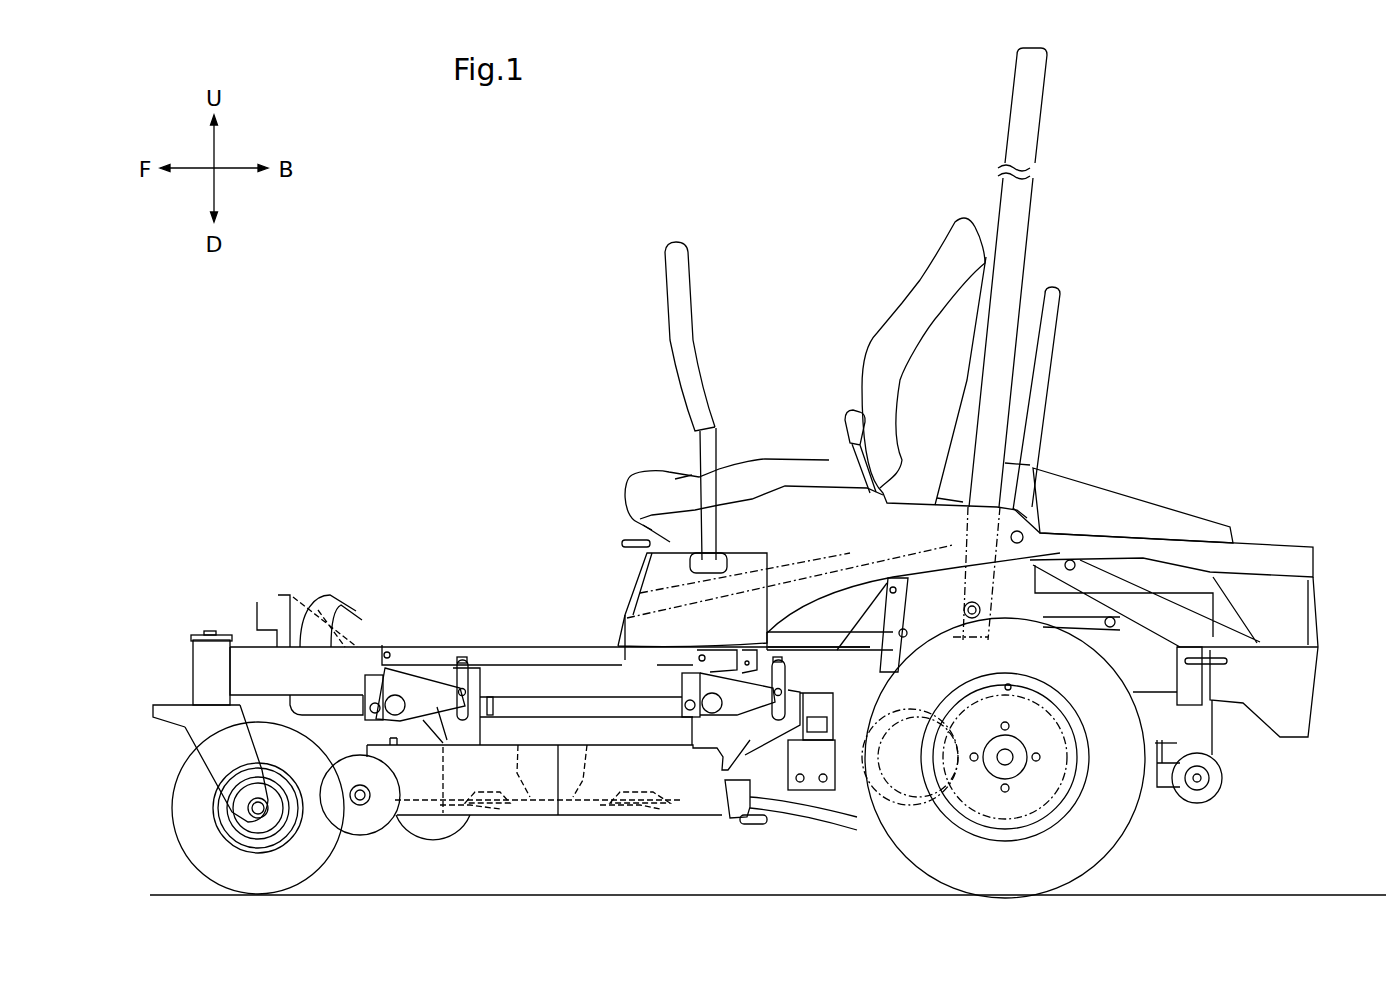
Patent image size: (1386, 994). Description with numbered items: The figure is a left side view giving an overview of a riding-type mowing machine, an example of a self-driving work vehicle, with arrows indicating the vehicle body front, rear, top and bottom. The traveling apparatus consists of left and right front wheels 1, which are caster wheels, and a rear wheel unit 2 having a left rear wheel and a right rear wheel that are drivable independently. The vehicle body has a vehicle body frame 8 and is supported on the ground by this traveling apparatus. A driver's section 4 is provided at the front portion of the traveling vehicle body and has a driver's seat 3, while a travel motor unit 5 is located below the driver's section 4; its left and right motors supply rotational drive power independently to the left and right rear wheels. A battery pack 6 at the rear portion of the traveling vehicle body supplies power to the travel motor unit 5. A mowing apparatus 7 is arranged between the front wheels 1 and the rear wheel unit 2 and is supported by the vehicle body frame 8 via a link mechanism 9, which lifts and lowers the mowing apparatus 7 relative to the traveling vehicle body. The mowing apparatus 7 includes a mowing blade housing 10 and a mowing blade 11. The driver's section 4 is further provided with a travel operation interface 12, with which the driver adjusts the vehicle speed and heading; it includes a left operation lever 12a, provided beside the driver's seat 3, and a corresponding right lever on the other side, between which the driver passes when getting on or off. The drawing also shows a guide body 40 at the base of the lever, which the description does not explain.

The front wheels 1 is at (200, 823).
The rear wheel unit 2 is at (1087, 827).
The driver's seat 3 is at (875, 340).
The driver's section 4 is at (752, 185).
The travel motor unit 5 is at (888, 800).
The battery pack 6 is at (1213, 727).
The mowing apparatus 7 is at (690, 823).
The vehicle body frame 8 is at (562, 682).
The link mechanism 9 is at (483, 623).
The mowing blade housing 10 is at (593, 782).
The mowing blade 11 is at (637, 817).
The travel operation interface 12 is at (650, 260).
The left operation lever 12a is at (677, 306).
The lever guide body 40 is at (632, 588).